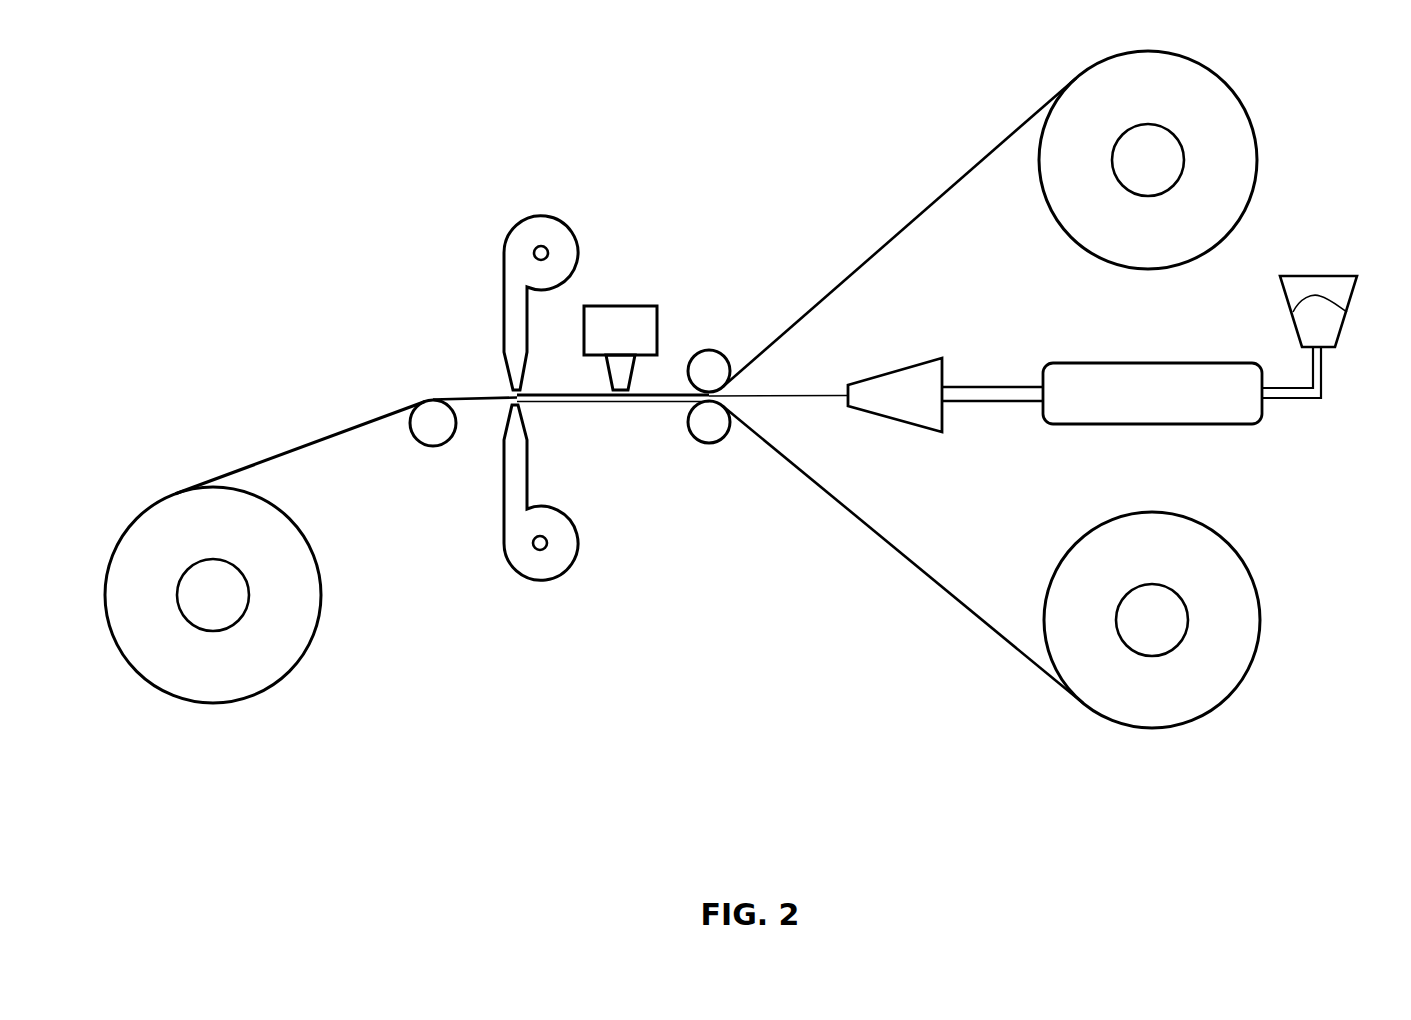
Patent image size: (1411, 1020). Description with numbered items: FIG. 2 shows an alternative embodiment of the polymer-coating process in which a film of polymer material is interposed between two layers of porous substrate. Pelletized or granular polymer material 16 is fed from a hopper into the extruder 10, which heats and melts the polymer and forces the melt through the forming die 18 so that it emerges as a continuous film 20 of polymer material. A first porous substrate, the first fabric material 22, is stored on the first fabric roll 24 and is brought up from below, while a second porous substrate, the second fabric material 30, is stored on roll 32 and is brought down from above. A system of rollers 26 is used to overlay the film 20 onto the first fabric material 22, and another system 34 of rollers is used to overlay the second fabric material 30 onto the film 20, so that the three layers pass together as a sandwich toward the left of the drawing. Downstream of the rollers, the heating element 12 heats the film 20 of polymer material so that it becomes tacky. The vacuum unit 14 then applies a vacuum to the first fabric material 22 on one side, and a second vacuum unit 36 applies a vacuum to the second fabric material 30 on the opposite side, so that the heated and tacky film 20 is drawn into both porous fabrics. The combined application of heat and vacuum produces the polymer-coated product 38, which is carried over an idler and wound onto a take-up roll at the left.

The extruder 10 is at (1123, 360).
The heating element 12 is at (613, 305).
The vacuum unit 14 is at (562, 573).
The pelletized/granular polymer material 16 is at (1322, 319).
The forming die 18 is at (920, 360).
The continuous film of polymer material 20 is at (817, 394).
The first fabric material 22 is at (847, 504).
The first fabric roll 24 is at (1260, 595).
The system of rollers 26 is at (700, 445).
The second fabric material 30 is at (908, 218).
The roll 32 is at (1255, 134).
The second system of rollers 34 is at (702, 349).
The second vacuum unit 36 is at (513, 223).
The polymer-coated product 38 is at (465, 395).